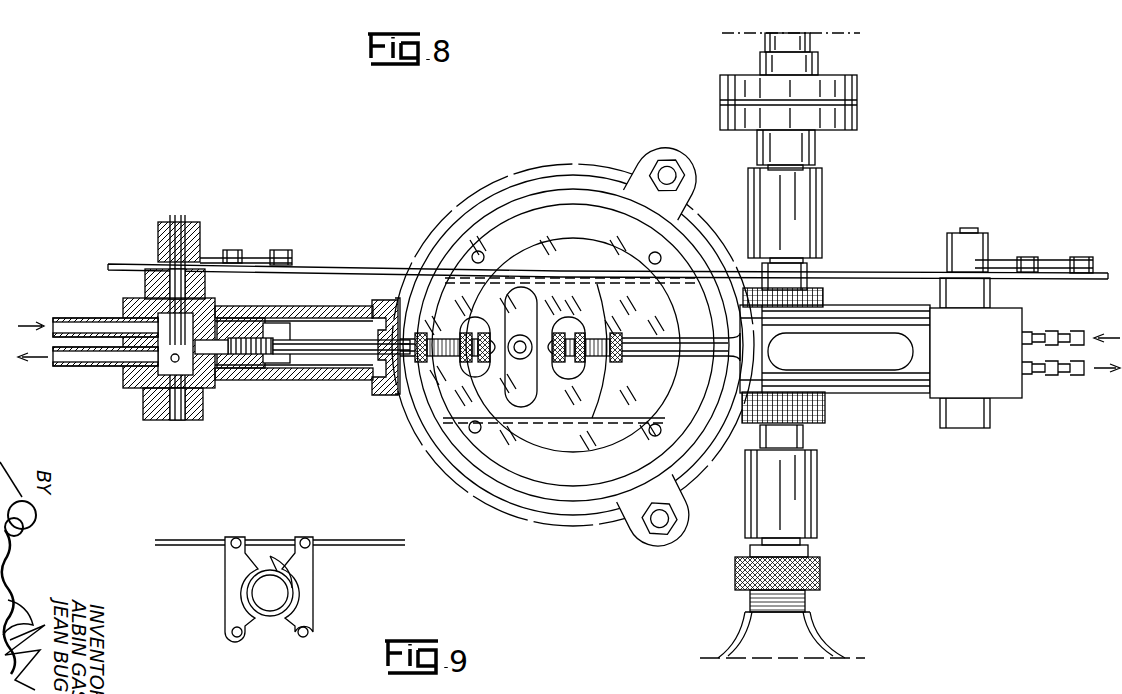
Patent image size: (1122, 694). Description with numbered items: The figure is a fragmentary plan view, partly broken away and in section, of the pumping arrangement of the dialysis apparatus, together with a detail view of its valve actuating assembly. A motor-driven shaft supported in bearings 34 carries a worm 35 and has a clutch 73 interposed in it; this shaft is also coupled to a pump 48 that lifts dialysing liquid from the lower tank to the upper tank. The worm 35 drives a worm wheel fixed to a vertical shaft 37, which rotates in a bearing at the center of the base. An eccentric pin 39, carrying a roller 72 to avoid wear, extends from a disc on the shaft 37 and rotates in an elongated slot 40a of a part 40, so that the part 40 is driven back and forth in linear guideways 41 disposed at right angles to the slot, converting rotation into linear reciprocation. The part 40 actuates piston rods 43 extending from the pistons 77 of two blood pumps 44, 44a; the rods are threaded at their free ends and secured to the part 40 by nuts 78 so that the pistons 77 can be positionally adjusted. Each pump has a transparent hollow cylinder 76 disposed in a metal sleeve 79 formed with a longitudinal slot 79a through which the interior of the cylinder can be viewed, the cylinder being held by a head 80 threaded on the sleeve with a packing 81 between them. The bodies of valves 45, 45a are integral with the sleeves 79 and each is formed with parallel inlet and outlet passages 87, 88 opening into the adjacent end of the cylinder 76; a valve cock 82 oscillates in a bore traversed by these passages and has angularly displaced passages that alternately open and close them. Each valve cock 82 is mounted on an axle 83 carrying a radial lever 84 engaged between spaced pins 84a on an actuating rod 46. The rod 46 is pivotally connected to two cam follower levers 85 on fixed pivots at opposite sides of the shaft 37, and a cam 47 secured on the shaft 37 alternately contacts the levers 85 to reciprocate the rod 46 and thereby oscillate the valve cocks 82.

In FIG. 8, the bearings 34 is at (822, 190).
In FIG. 8, the worm 35 is at (822, 304).
In FIG. 8, the shaft 37 is at (572, 505).
In FIG. 9, the shaft 37 is at (285, 585).
In FIG. 8, the eccentric pin 39 is at (512, 318).
In FIG. 8, the part 40 is at (600, 308).
In FIG. 8, the elongated slot 40a is at (523, 372).
In FIG. 8, the linear guideways 41 is at (602, 258).
In FIG. 8, the piston rods 43 is at (326, 340).
In FIG. 8, the pump 44 is at (302, 328).
In FIG. 8, the pump 44a is at (866, 315).
In FIG. 8, the valve 45 is at (132, 385).
In FIG. 8, the valve 45a is at (1004, 395).
In FIG. 8, the rod 46 is at (376, 270).
In FIG. 9, the rod 46 is at (202, 542).
In FIG. 9, the cam 47 is at (284, 571).
In FIG. 8, the pump 48 is at (825, 638).
In FIG. 8, the roller 72 is at (522, 345).
In FIG. 8, the clutch 73 is at (858, 95).
In FIG. 8, the hollow cylinder 76 is at (292, 382).
In FIG. 8, the piston 77 is at (250, 381).
In FIG. 8, the nuts 78 is at (405, 388).
In FIG. 8, the metal sleeve 79 is at (241, 307).
In FIG. 8, the longitudinal slot 79a is at (875, 370).
In FIG. 8, the head 80 is at (394, 298).
In FIG. 8, the packing 81 is at (370, 330).
In FIG. 8, the valve cock 82 is at (162, 322).
In FIG. 8, the axle 83 is at (178, 405).
In FIG. 8, the lever 84 is at (260, 250).
In FIG. 8, the pins 84a is at (230, 250).
In FIG. 9, the cam follower levers 85 is at (227, 570).
In FIG. 8, the inlet passage 87 is at (143, 330).
In FIG. 8, the outlet passage 88 is at (140, 359).